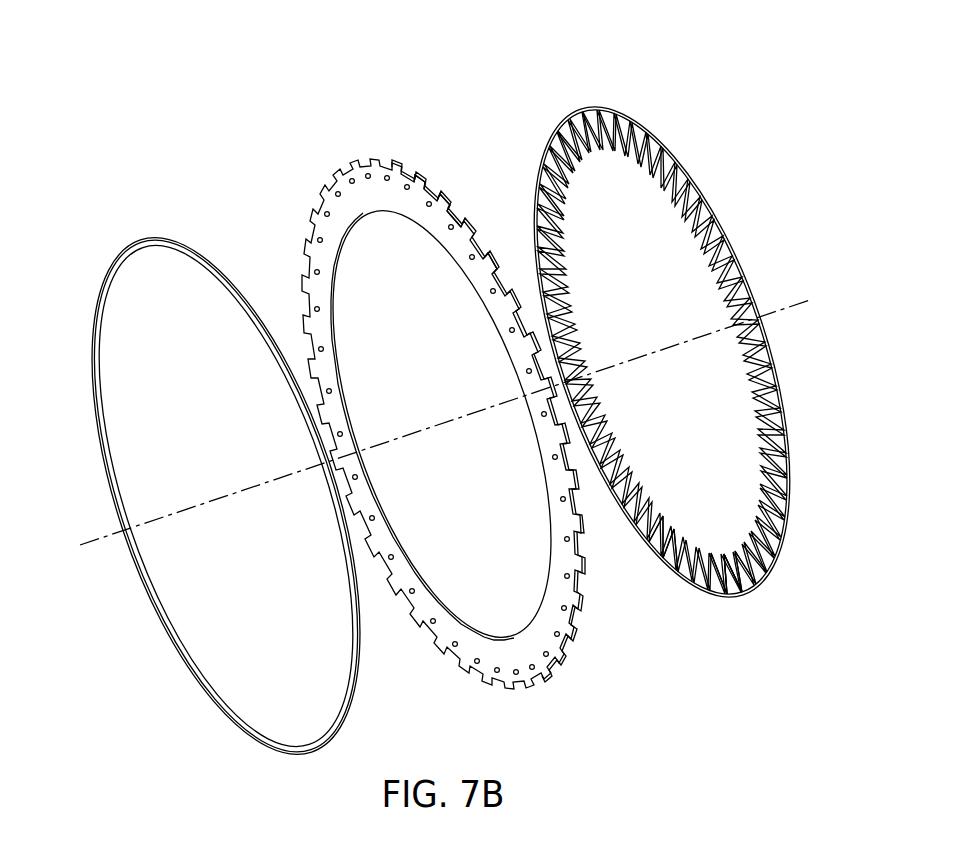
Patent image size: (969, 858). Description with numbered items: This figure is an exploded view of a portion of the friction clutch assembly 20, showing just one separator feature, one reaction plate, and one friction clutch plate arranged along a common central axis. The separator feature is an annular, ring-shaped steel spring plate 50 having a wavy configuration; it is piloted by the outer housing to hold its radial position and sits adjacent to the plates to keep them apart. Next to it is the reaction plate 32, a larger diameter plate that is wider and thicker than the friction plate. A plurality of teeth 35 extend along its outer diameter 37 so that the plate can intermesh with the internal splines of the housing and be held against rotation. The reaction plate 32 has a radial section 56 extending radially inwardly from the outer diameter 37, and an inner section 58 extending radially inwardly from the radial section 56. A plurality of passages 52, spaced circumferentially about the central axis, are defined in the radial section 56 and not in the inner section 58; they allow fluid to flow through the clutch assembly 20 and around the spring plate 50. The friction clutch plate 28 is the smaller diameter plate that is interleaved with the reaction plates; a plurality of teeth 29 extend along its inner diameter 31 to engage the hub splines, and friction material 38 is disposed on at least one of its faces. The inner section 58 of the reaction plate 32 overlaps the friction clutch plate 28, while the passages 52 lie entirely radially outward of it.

The friction clutch assembly 20 is at (733, 102).
The friction clutch plate 28 is at (722, 216).
The teeth 29 is at (750, 530).
The inner diameter 31 is at (733, 551).
The reaction plate 32 is at (600, 628).
The teeth 35 is at (453, 209).
The outer diameter 37 is at (467, 210).
The friction material 38 is at (627, 113).
The spring plate 50 is at (350, 702).
The passage 52 is at (424, 181).
The radial section 56 is at (468, 236).
The inner section 58 is at (548, 562).